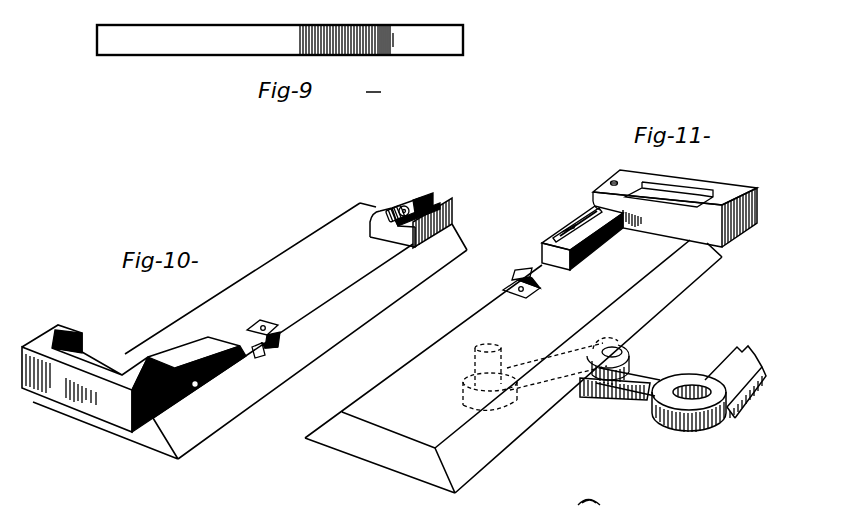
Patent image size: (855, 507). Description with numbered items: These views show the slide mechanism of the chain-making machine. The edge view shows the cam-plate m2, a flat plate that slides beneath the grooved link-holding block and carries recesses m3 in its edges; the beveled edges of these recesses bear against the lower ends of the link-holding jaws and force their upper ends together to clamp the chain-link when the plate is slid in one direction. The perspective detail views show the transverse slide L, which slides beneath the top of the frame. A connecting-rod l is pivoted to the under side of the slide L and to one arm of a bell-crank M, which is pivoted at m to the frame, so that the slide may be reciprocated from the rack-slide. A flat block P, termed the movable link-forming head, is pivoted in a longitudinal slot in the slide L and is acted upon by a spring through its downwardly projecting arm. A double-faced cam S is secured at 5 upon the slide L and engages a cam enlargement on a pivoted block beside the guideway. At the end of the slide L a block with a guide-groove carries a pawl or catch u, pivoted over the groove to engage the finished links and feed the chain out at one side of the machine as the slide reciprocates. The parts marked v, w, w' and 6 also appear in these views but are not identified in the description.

In FIG. 9, the cam-plate m2 is at (193, 45).
In FIG. 9, the recesses m3 is at (347, 28).
In FIG. 10, the transverse slide L is at (142, 358).
In FIG. 11, the transverse slide L is at (551, 291).
In FIG. 10, the securing point of cam 5 is at (265, 323).
In FIG. 11, the securing point of cam 5 is at (512, 296).
In FIG. 10, the double-faced cam S is at (275, 350).
In FIG. 11, the double-faced cam S is at (523, 269).
In FIG. 10, the thumb screw v is at (388, 211).
In FIG. 10, the gauge block w is at (405, 210).
In FIG. 10, the gauge plate w' is at (437, 214).
In FIG. 11, the screws 6 is at (675, 208).
In FIG. 11, the flat block (movable link-forming head) P is at (573, 222).
In FIG. 11, the connecting-rod l is at (547, 368).
In FIG. 11, the bell-crank M is at (653, 380).
In FIG. 11, the pivot of bell-crank m is at (687, 398).
In FIG. 11, the pawl or catch u is at (573, 501).